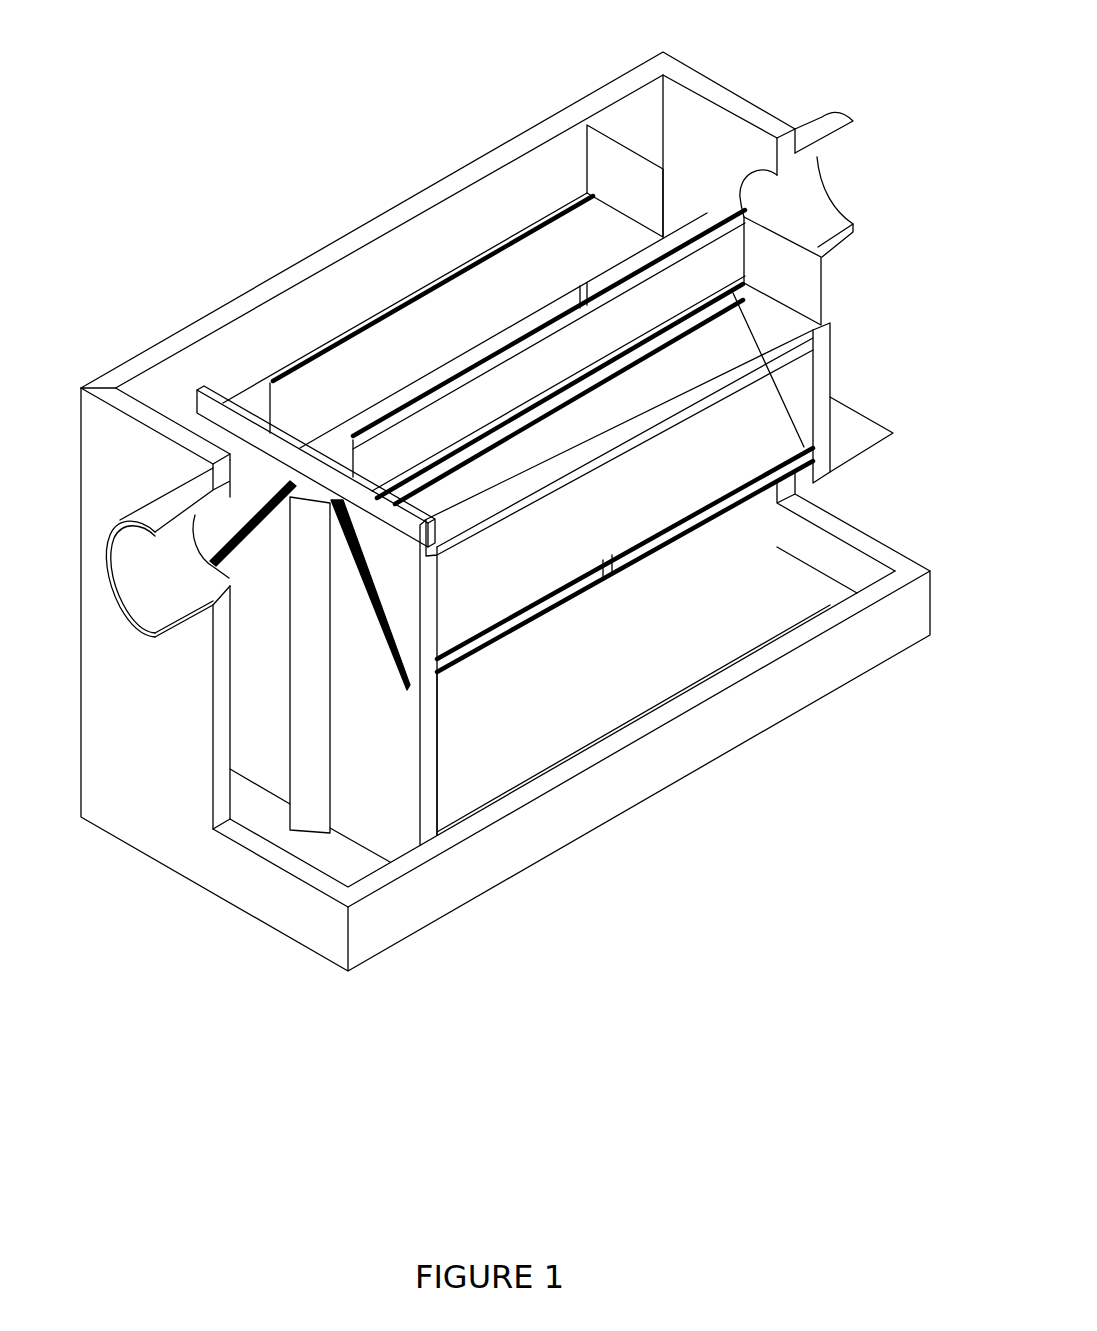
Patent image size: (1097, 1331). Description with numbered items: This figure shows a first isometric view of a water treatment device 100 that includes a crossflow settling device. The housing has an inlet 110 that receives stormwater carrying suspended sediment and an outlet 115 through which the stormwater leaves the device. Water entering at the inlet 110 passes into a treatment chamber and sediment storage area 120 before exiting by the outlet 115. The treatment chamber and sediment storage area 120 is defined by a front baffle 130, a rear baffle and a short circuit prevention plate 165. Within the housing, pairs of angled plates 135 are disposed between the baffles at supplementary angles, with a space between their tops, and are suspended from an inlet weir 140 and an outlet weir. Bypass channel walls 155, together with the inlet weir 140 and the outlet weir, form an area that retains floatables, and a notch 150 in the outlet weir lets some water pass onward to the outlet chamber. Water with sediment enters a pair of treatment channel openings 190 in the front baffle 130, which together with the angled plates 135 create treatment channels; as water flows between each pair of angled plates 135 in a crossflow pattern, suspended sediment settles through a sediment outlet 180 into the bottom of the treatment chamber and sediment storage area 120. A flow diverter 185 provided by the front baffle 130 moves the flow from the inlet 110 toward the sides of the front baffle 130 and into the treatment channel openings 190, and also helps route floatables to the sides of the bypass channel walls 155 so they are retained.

The treatment device 100 is at (773, 833).
The inlet 110 is at (132, 595).
The outlet 115 is at (827, 208).
The treatment chamber and sediment storage area 120 is at (613, 698).
The front baffle 130 is at (391, 728).
The angled plates 135 is at (585, 551).
The inlet weir 140 is at (200, 388).
The notch 150 is at (687, 207).
The bypass channel walls 155 is at (485, 333).
The short circuit prevention plate 165 is at (880, 444).
The sediment outlet 180 is at (653, 553).
The flow diverter 185 is at (317, 713).
The treatment channel openings 190 is at (353, 567).